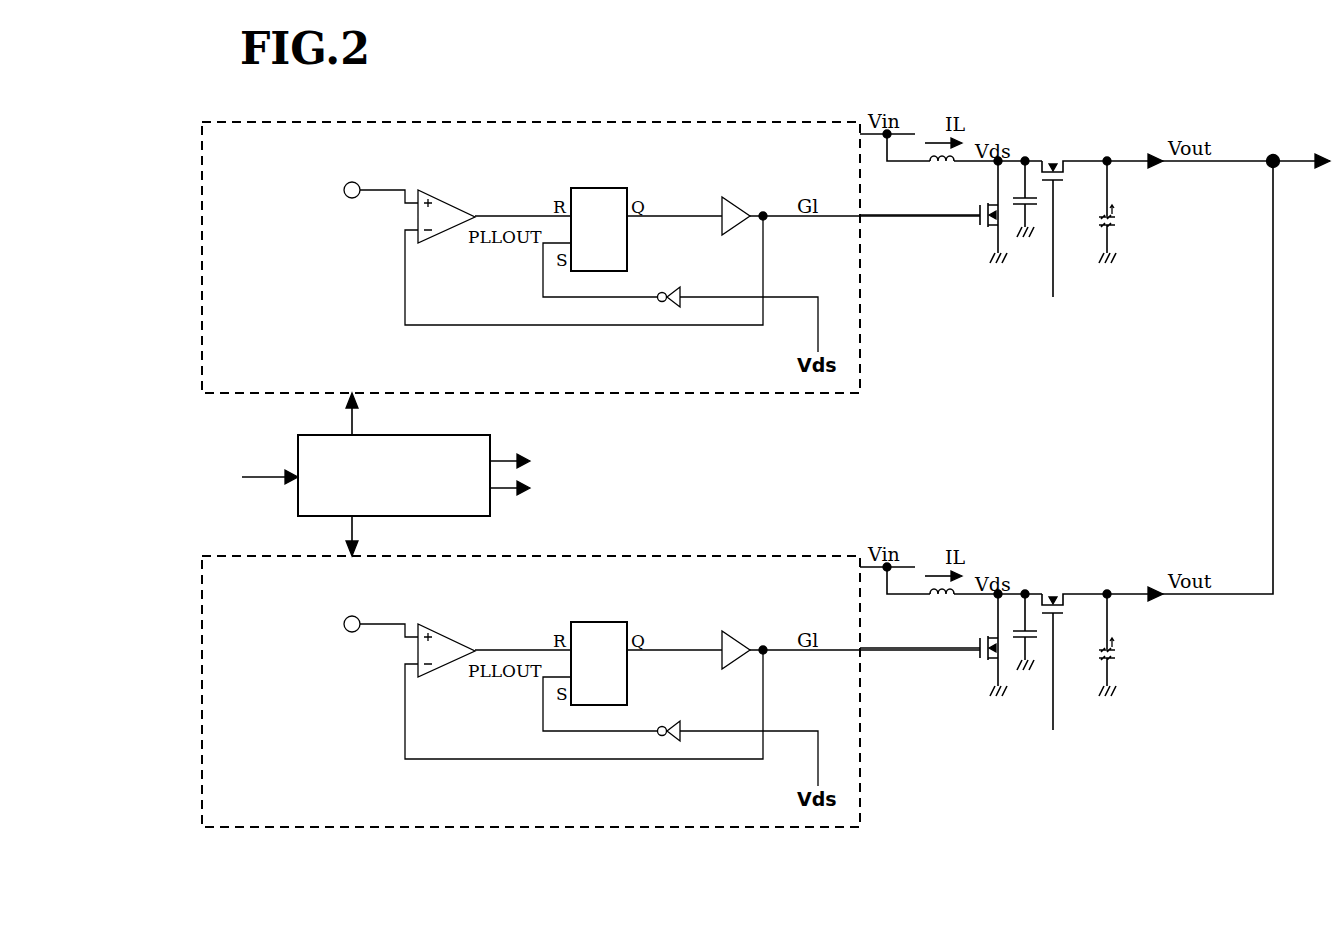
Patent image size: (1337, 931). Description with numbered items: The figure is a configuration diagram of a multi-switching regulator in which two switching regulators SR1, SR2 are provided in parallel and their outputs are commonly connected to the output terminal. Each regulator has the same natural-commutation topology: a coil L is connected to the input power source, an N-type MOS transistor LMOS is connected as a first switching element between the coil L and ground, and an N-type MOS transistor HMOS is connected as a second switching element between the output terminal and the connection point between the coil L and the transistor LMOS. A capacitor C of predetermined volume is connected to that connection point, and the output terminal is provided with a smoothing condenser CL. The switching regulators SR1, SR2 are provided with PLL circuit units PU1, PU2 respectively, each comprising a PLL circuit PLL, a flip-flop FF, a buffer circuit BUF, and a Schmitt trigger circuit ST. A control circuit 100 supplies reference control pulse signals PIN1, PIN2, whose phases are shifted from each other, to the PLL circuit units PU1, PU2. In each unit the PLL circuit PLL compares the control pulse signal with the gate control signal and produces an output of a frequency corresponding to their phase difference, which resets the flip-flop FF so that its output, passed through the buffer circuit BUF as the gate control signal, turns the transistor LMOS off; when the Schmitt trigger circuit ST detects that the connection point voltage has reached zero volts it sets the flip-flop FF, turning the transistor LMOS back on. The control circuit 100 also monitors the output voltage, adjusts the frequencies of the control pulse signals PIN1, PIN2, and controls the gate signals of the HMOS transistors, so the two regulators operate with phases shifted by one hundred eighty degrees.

The control circuit 100 is at (383, 474).
The PLL circuit unit PU1 is at (531, 245).
The PLL circuit unit PU2 is at (531, 713).
The switching regulator SR1 is at (1104, 62).
The switching regulator SR2 is at (1091, 524).
The control pulse signal PIN1 is at (342, 187).
The control pulse signal PIN2 is at (342, 621).
The PLL circuit PLL is at (448, 423).
The flip-flop FF is at (599, 446).
The buffer circuit BUF is at (734, 419).
The Schmitt trigger circuit ST is at (680, 514).
The N-type MOS transistor LMOS is at (933, 428).
The N-type MOS transistor HMOS is at (1072, 427).
The coil L is at (948, 389).
The capacitor C is at (1032, 415).
The smoothing condenser CL is at (1135, 428).